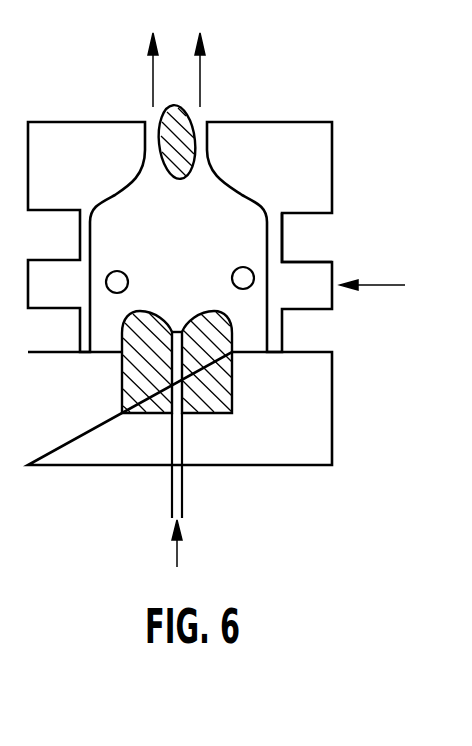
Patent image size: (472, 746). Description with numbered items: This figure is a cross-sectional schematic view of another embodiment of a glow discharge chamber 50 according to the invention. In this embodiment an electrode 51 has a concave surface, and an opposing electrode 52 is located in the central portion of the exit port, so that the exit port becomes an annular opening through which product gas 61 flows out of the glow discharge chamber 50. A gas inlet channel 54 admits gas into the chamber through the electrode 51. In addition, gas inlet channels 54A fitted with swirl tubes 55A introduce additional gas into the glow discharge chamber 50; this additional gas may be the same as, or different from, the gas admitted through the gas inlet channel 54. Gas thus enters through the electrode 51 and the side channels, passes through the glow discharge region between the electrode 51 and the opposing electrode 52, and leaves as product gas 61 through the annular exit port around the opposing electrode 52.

The glow discharge chamber 50 is at (192, 216).
The electrode 51 is at (152, 322).
The opposing electrode 52 is at (190, 125).
The gas inlet channel 54 is at (182, 490).
The gas inlet channels 54A is at (313, 262).
The swirl tubes 55A is at (233, 275).
The product gas 61 is at (197, 50).